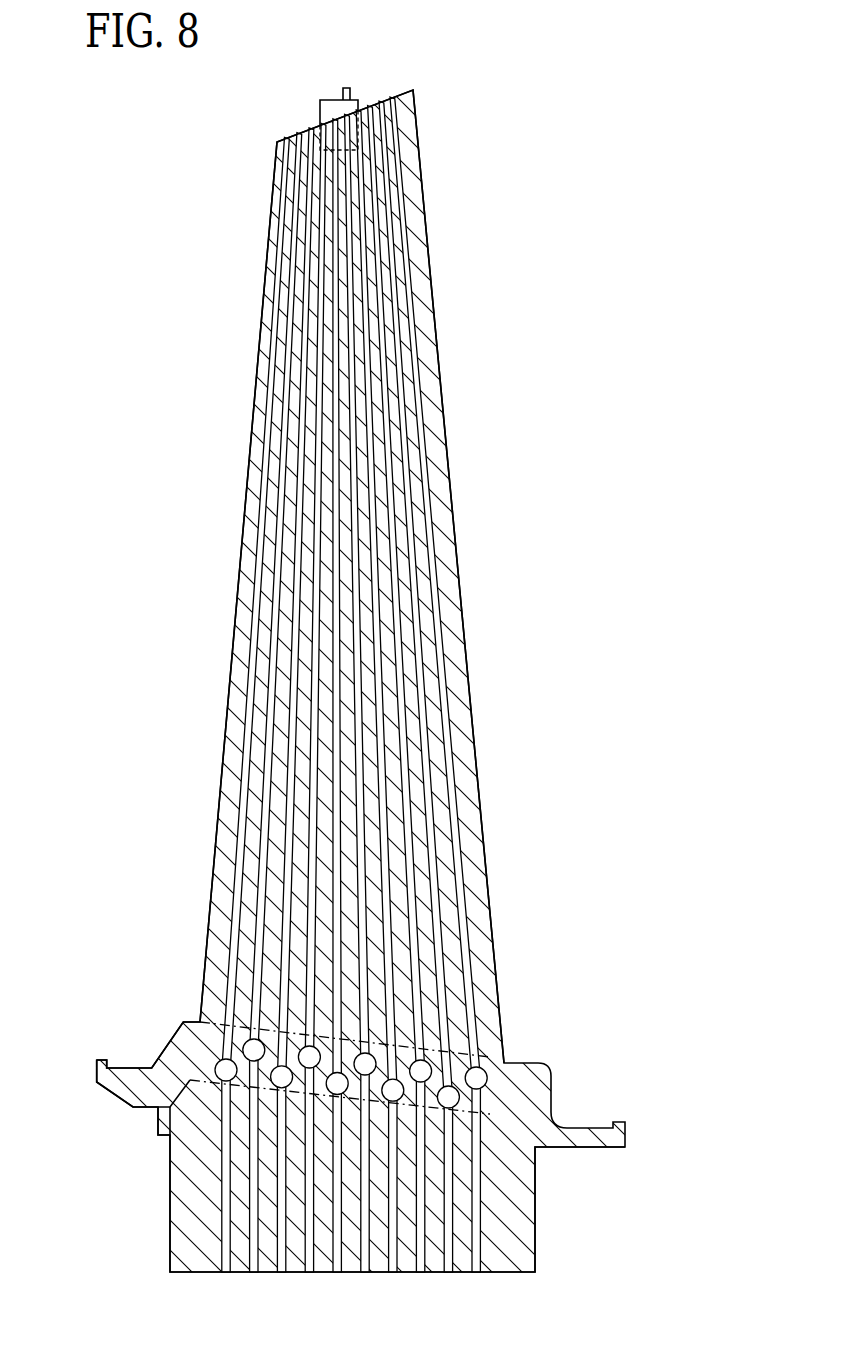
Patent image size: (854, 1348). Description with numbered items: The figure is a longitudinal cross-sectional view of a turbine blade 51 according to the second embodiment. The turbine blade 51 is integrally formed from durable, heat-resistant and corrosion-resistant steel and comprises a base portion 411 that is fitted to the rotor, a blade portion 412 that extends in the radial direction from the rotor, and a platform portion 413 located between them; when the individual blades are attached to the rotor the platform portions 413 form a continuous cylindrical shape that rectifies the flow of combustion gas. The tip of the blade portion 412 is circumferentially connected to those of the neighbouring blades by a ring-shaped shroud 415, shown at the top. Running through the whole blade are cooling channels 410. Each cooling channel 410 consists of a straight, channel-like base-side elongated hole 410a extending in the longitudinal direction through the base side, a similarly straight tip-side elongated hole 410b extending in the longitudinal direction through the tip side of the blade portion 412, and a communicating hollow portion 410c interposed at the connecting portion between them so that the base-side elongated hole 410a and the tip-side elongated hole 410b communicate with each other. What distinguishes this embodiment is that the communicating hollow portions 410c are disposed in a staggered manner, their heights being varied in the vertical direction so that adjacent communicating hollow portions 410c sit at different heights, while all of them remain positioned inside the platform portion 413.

The turbine blade 51 is at (118, 190).
The cooling channel 410 is at (494, 684).
The base-side elongated hole 410a is at (420, 1220).
The tip-side elongated hole 410b is at (462, 892).
The communicating hollow portion 410c is at (457, 1061).
The base portion 411 is at (170, 1185).
The blade portion 412 is at (243, 508).
The platform portion 413 is at (182, 1022).
The shroud 415 is at (331, 99).